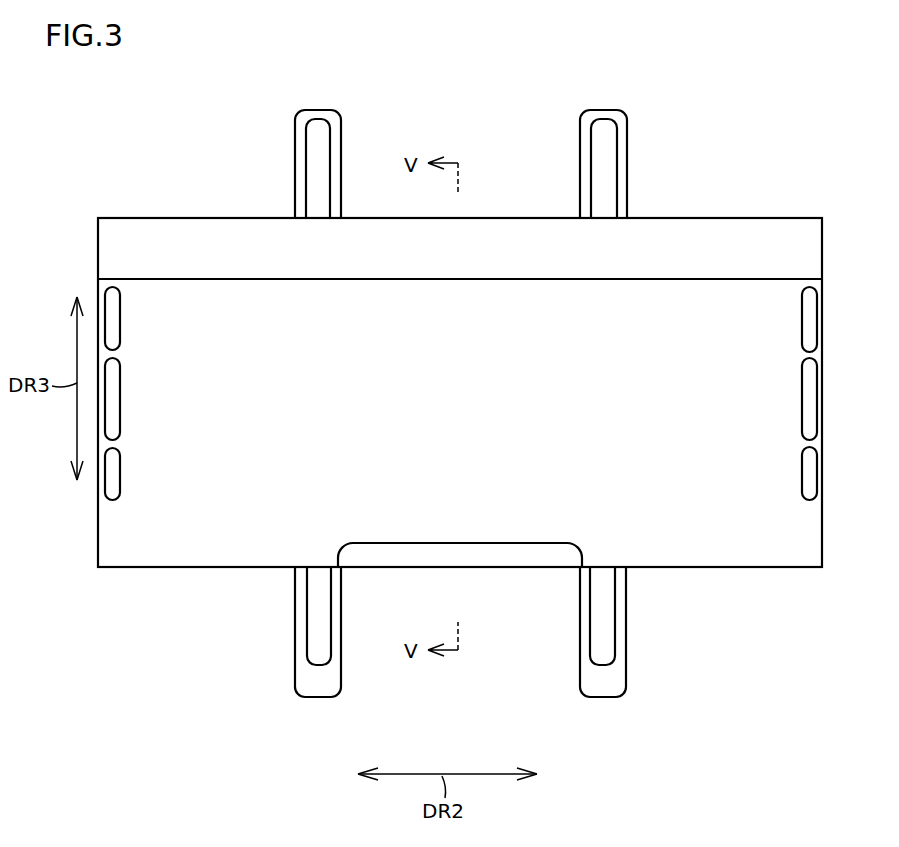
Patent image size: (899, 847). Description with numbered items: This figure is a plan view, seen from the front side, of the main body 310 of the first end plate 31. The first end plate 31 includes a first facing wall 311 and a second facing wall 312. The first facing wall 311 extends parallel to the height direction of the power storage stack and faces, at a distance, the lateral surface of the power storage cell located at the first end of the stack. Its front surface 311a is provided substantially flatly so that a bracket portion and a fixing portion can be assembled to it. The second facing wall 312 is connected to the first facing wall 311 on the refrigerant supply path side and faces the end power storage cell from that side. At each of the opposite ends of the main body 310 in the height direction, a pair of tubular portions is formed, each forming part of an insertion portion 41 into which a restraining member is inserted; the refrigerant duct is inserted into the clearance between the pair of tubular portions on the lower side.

The first end plate 31 is at (477, 315).
The main body 310 is at (802, 167).
The first facing wall 311 is at (822, 398).
The front surface 311a is at (174, 534).
The second facing wall 312 is at (456, 568).
The insertion portion 41 is at (320, 108).